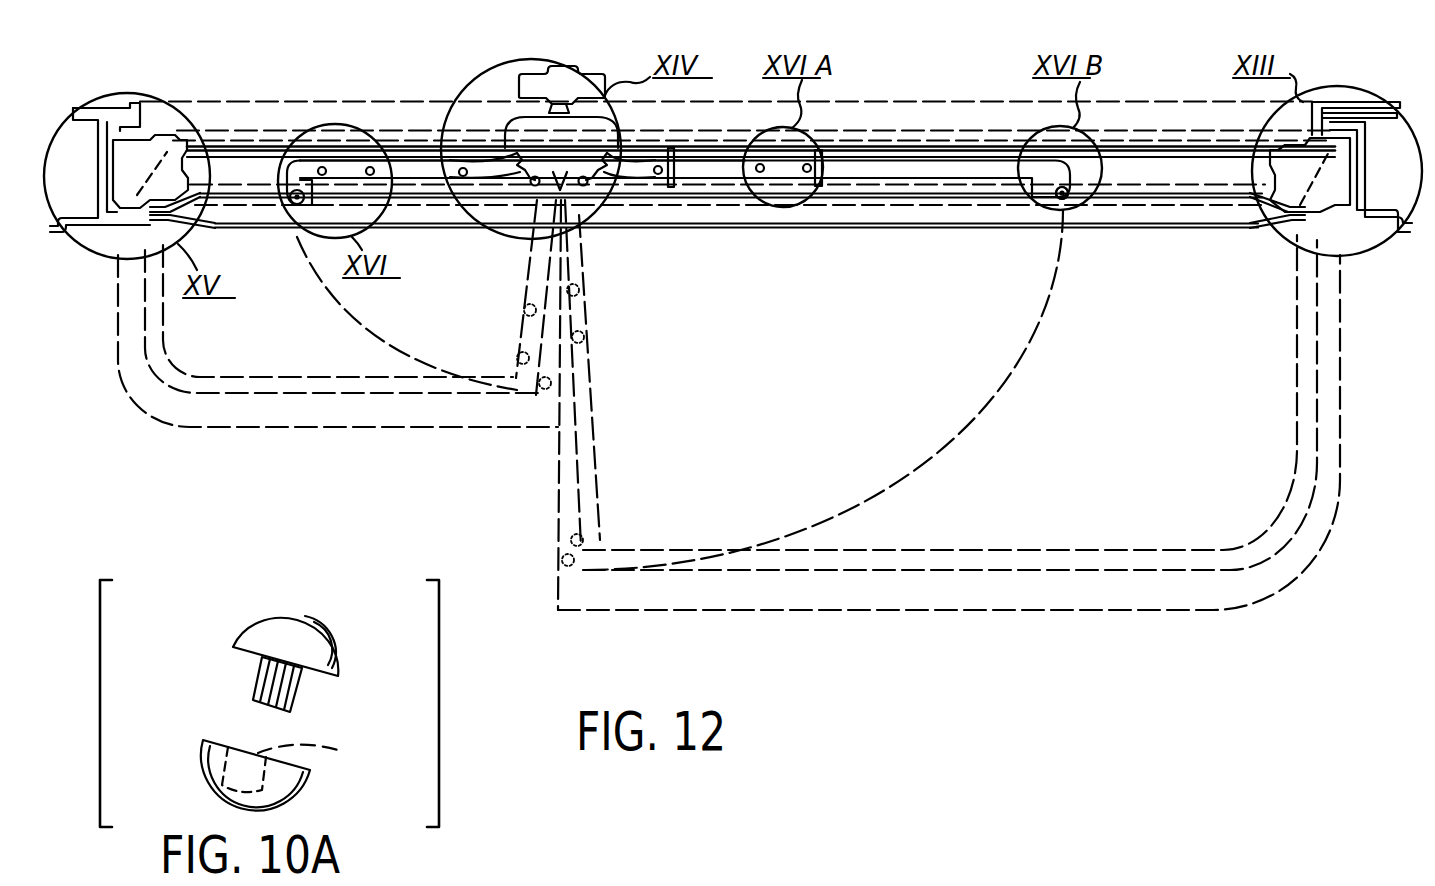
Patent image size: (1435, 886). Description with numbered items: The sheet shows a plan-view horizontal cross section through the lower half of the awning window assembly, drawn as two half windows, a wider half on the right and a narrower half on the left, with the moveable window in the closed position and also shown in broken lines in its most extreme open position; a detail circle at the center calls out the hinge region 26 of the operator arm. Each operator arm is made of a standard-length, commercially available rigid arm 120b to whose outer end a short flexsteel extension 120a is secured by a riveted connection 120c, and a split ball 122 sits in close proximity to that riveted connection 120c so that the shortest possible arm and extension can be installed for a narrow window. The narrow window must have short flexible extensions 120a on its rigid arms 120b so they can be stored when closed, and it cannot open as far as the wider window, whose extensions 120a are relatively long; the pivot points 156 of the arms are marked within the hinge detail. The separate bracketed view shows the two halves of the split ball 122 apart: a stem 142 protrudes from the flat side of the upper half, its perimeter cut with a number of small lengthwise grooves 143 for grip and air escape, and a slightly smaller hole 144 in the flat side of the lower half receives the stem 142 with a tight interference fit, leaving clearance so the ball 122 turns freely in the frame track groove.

In FIG. 12, the hinge assembly 26 is at (478, 72).
In FIG. 12, the flexsteel extension 120a is at (940, 167).
In FIG. 12, the rigid arm 120b is at (722, 166).
In FIG. 12, the riveted connection 120c is at (787, 170).
In FIG. 12, the split ball 122 is at (1058, 199).
In FIG. 10A, the split ball 122 is at (238, 619).
In FIG. 10A, the stem 142 is at (256, 688).
In FIG. 10A, the lengthwise grooves 143 is at (300, 690).
In FIG. 10A, the hole 144 is at (338, 750).
In FIG. 12, the pivot pin 156 is at (532, 185).